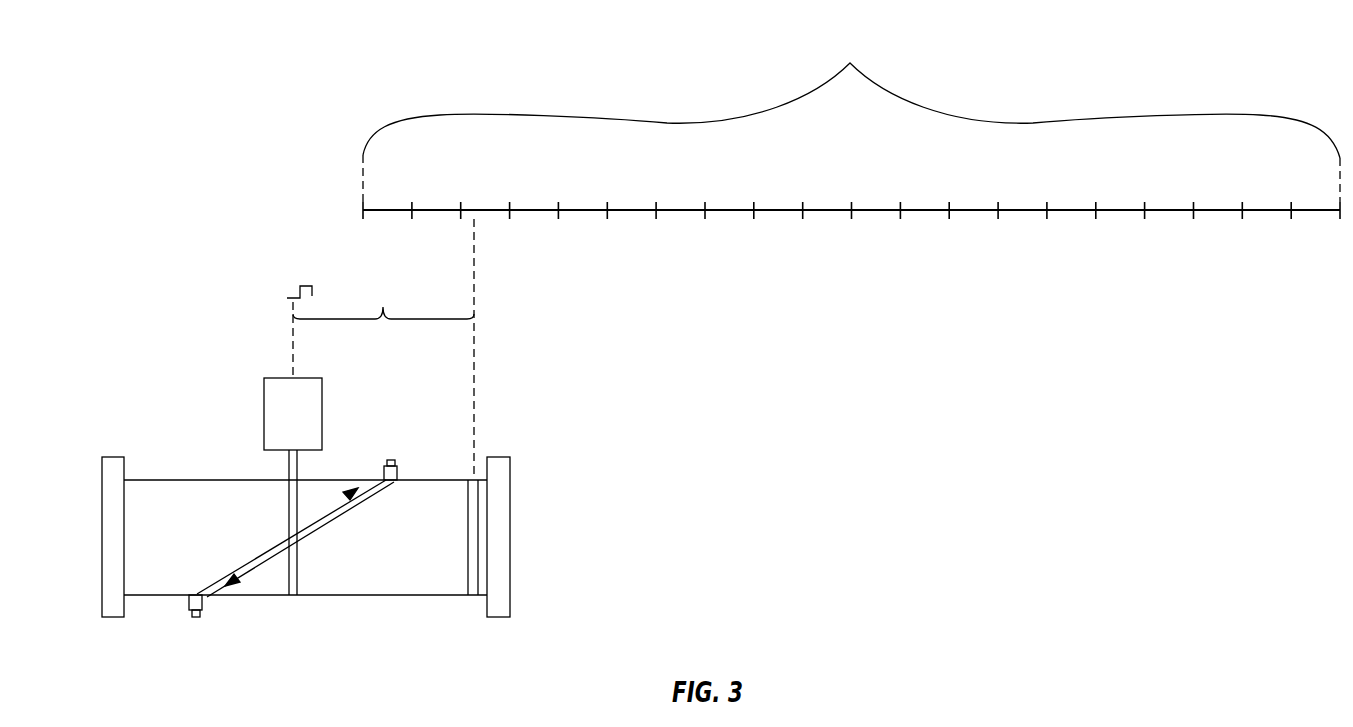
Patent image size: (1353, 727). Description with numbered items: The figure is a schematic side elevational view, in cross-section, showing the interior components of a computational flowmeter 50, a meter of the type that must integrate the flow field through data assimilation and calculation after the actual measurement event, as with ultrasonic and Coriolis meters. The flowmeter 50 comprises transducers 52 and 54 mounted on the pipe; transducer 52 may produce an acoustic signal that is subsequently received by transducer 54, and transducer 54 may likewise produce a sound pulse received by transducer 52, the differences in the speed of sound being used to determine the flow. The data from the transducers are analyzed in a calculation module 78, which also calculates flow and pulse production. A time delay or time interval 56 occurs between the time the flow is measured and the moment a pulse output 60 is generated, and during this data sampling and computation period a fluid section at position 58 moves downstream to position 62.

The computational flowmeter 50 is at (150, 426).
The transducer 52 is at (189, 605).
The transducer 54 is at (400, 472).
The time delay or time interval 56 is at (383, 296).
The position of fluid section 58 is at (297, 578).
The pulse output 60 is at (300, 283).
The position of fluid section 62 is at (470, 587).
The calculation module 78 is at (264, 414).